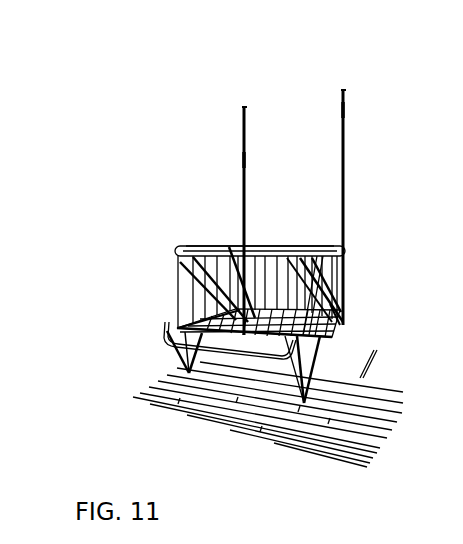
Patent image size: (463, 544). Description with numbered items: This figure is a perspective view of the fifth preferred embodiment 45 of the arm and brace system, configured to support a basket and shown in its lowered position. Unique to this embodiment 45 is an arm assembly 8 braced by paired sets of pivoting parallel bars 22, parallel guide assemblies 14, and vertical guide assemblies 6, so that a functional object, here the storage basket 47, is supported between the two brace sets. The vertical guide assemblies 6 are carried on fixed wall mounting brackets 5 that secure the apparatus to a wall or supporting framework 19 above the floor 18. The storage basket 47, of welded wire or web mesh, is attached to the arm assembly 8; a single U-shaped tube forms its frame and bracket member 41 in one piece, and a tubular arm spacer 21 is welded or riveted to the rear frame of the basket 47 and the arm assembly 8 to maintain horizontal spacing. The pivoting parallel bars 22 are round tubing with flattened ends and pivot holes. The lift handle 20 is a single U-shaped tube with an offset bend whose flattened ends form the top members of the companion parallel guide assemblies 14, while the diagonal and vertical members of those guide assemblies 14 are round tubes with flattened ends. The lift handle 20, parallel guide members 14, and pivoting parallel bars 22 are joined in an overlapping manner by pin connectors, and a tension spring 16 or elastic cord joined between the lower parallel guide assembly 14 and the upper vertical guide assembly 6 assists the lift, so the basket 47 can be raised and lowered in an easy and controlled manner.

The fifth preferred embodiment 45 is at (116, 54).
The fixed wall mounting brackets 5 is at (245, 107).
The vertical guide assembly 6 is at (340, 110).
The arm assembly 8 is at (187, 243).
The tubular arm spacer 21 is at (258, 252).
The pivoting parallel bars 22 is at (230, 246).
The frame and bracket member 41 is at (185, 248).
The storage basket 47 is at (176, 318).
The lift handle 20 is at (163, 333).
The parallel guide assembly 14 is at (166, 357).
The tension spring 16 is at (330, 303).
The floor 18 is at (296, 437).
The wall or supporting framework 19 is at (385, 376).